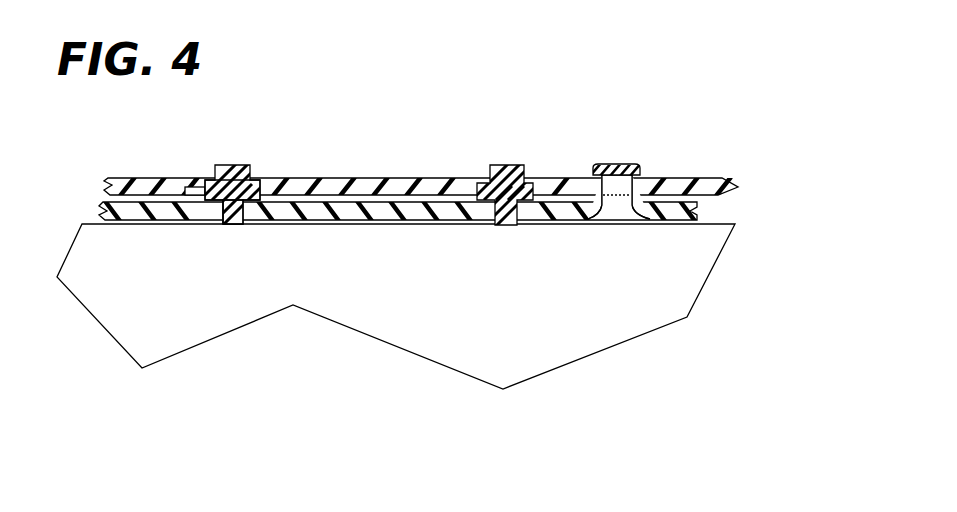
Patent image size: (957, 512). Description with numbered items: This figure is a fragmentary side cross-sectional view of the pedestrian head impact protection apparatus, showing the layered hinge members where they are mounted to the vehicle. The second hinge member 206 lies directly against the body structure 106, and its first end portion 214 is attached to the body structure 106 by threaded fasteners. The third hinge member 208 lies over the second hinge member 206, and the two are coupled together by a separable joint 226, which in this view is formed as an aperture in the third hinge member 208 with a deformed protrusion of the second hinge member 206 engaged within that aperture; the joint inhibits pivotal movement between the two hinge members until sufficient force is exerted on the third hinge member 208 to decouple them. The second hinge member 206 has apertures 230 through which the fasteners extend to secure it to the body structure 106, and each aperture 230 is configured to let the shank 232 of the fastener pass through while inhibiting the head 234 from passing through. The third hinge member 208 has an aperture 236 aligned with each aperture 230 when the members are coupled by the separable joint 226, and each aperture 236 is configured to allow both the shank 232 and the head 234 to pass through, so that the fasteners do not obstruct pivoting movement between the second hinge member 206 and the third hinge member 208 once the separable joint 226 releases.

The body structure 106 is at (428, 347).
The second hinge member 206 is at (697, 207).
The third hinge member 208 is at (709, 178).
The first end portion of the second hinge member 214 is at (367, 210).
The separable joint 226 is at (614, 163).
The apertures 230 is at (217, 210).
The shank portion 232 is at (233, 225).
The head 234 is at (244, 163).
The aperture 236 is at (196, 178).